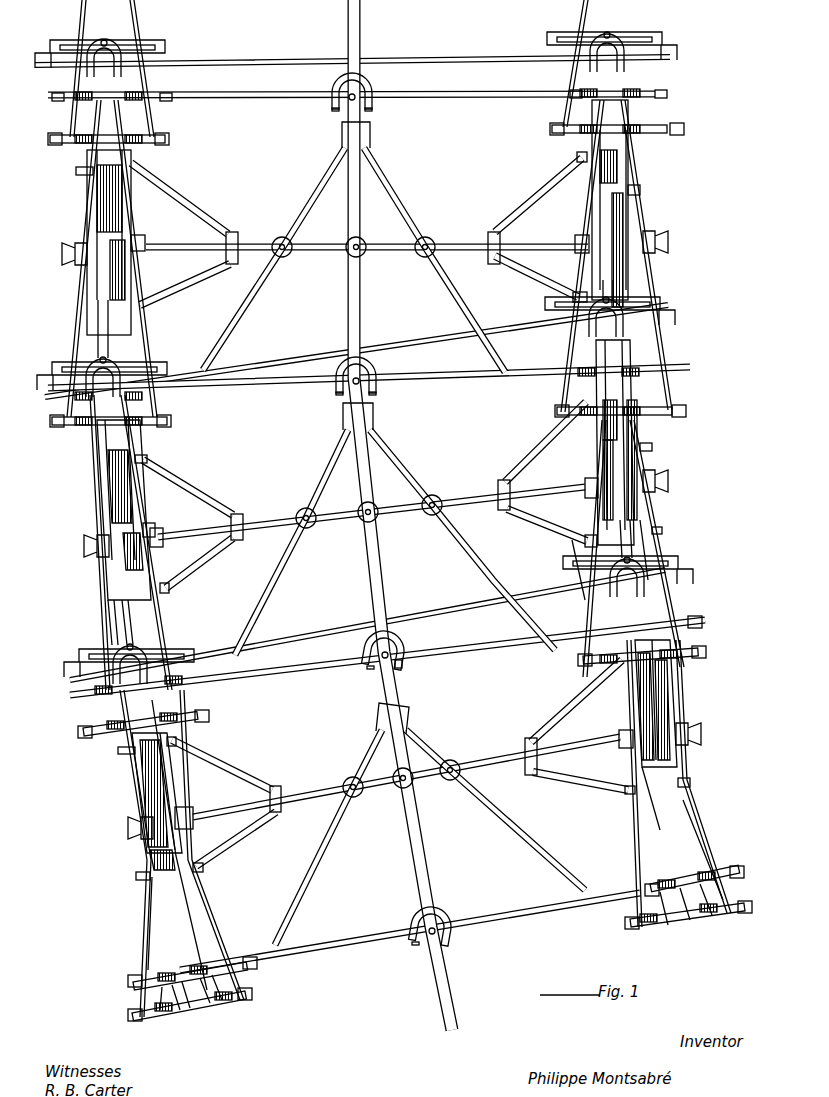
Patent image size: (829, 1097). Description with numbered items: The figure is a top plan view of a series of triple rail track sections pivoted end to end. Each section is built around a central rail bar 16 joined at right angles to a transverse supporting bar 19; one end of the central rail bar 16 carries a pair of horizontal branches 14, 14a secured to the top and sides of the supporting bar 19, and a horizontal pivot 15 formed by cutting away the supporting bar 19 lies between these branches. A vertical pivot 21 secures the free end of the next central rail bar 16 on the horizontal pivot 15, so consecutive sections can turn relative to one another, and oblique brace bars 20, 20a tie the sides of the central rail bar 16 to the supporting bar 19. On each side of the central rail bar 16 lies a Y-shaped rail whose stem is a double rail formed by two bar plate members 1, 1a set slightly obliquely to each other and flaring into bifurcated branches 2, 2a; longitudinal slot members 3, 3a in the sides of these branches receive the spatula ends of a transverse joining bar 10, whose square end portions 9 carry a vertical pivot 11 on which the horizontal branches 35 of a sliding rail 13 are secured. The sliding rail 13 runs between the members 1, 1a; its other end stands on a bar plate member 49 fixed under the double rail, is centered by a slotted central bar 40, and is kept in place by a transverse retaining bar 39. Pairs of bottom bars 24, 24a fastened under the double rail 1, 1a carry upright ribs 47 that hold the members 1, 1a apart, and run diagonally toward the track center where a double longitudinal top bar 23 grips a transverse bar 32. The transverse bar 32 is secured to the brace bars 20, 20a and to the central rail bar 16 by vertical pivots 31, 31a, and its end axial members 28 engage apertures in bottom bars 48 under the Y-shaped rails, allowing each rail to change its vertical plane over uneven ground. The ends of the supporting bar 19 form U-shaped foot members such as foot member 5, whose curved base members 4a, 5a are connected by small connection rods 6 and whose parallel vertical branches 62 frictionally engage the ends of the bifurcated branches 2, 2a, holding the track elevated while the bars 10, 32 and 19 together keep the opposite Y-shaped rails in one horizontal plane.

The stem rail member 1 is at (88, 225).
The stem rail member 1a is at (138, 440).
The bifurcated branch 2 is at (68, 405).
The bifurcated branch 2a is at (150, 410).
The slot member 3 is at (108, 632).
The rod 3a is at (160, 623).
The curved base member 4a is at (75, 143).
The U-shaped foot member 5 is at (132, 985).
The curved base member 5a is at (140, 95).
The connection rod 6 is at (130, 120).
The horizontal bar 9 is at (145, 44).
The transverse joining bar 10 is at (225, 62).
The vertical pivot 11 is at (110, 358).
The sliding rail 13 is at (105, 330).
The branch 14 is at (338, 392).
The hinge jaw 14a is at (405, 670).
The horizontal pivot 15 is at (340, 92).
The central rail bar 16 is at (362, 44).
The transverse supporting bar 19 is at (262, 100).
The oblique brace bar 20 is at (315, 205).
The oblique brace bar 20a is at (398, 200).
The vertical pivot 21 is at (370, 90).
The longitudinal top bar 23 is at (238, 240).
The bottom bar 24 is at (185, 205).
The brace 24a is at (530, 282).
The axial member 28 is at (62, 258).
The vertical pivot 31 is at (290, 242).
The vertical pivot 31a is at (360, 243).
The transverse bar 32 is at (310, 255).
The branch 35 is at (88, 70).
The transverse retaining bar 39 is at (138, 238).
The central slotted bar 40 is at (108, 203).
The rib 47 is at (78, 172).
The bottom bar 48 is at (163, 545).
The bar plate member 49 is at (120, 265).
The vertical branch 62 is at (54, 98).